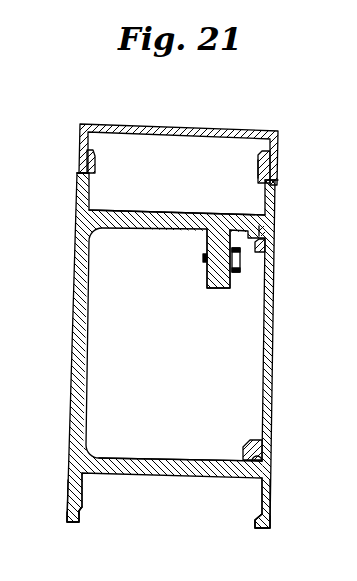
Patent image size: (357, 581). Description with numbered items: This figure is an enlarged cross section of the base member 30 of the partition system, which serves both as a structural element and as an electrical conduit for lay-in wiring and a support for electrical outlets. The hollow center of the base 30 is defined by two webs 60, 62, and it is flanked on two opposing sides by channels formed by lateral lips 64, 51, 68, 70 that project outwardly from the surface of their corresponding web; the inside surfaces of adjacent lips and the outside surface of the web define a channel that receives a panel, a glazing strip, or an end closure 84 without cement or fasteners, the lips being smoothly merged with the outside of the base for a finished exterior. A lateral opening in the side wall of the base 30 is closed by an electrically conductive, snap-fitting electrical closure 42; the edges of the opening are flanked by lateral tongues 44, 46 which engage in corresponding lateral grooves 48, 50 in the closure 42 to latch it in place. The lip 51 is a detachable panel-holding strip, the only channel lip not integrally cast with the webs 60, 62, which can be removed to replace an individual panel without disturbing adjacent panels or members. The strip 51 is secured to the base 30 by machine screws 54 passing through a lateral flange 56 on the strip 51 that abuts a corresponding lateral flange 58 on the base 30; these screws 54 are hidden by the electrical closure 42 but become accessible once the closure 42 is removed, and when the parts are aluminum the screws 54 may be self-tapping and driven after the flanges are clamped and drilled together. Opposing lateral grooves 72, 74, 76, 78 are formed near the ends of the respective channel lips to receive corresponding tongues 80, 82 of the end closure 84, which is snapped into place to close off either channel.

The base member 30 is at (178, 346).
The electrical closure 42 is at (274, 350).
The lateral tongue 44 is at (272, 228).
The lateral tongue 46 is at (263, 470).
The lateral groove 48 is at (264, 254).
The lateral groove 50 is at (262, 444).
The panel-holding strip 51 is at (276, 196).
The machine screw 54 is at (204, 258).
The lateral flange 56 is at (237, 274).
The lateral flange 58 is at (206, 282).
The web 60 is at (158, 476).
The web 62 is at (170, 212).
The lateral lip 64 is at (76, 200).
The lateral lip 68 is at (70, 494).
The lateral lip 70 is at (272, 500).
The lateral groove 72 is at (78, 171).
The lateral groove 74 is at (277, 172).
The lateral groove 76 is at (84, 516).
The lateral groove 78 is at (258, 520).
The tongue 80 is at (96, 167).
The tongue 82 is at (258, 168).
The end closure 84 is at (198, 142).